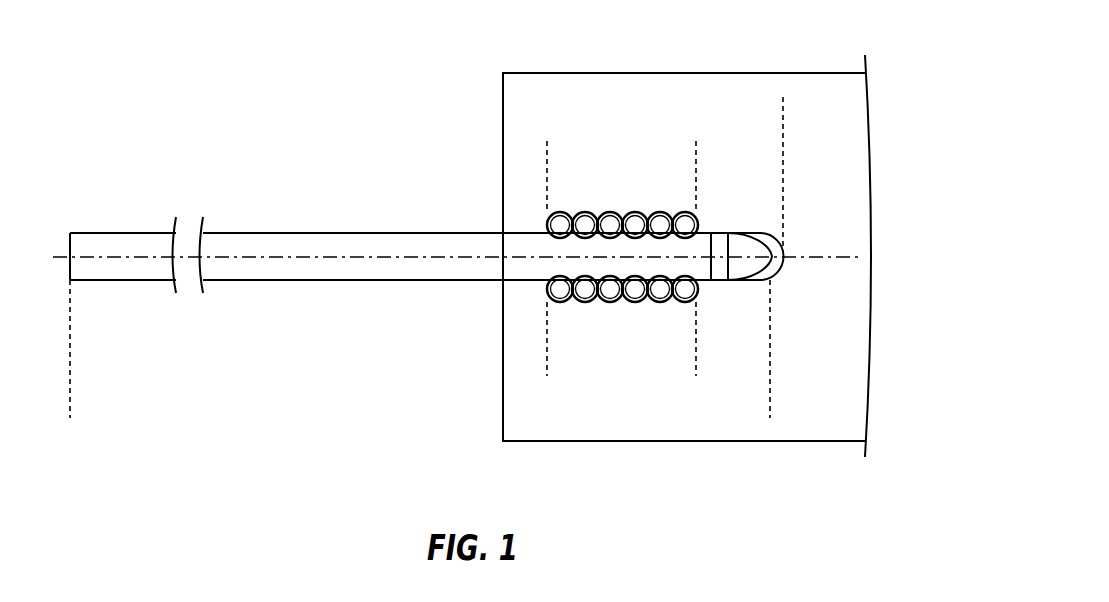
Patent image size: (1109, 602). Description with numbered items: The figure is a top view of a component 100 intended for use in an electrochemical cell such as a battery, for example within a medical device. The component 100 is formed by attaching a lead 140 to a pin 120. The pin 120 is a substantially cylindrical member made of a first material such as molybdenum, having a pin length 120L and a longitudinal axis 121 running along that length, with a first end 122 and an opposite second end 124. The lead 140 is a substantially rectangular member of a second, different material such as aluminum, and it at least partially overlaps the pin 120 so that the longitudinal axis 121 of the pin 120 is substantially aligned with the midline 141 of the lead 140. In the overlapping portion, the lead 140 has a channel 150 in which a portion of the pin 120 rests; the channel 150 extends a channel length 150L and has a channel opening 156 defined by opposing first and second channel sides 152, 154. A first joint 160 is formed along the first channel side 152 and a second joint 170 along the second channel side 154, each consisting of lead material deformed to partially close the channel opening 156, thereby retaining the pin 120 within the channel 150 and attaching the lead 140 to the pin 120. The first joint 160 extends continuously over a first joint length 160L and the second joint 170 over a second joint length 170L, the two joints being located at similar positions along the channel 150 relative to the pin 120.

The component 100 is at (717, 50).
The pin 120 is at (311, 232).
The longitudinal axis 121 is at (352, 256).
The first end 122 is at (773, 258).
The second end 124 is at (70, 243).
The lead 140 is at (618, 442).
The midline 141 is at (815, 257).
The channel 150 is at (777, 267).
The first channel side 152 is at (747, 282).
The second channel side 154 is at (748, 232).
The channel opening 156 is at (780, 243).
The first joint 160 is at (583, 293).
The second joint 170 is at (583, 217).
The pin length 120L is at (770, 415).
The channel length 150L is at (783, 97).
The first joint length 160L is at (696, 370).
The second joint length 170L is at (696, 141).